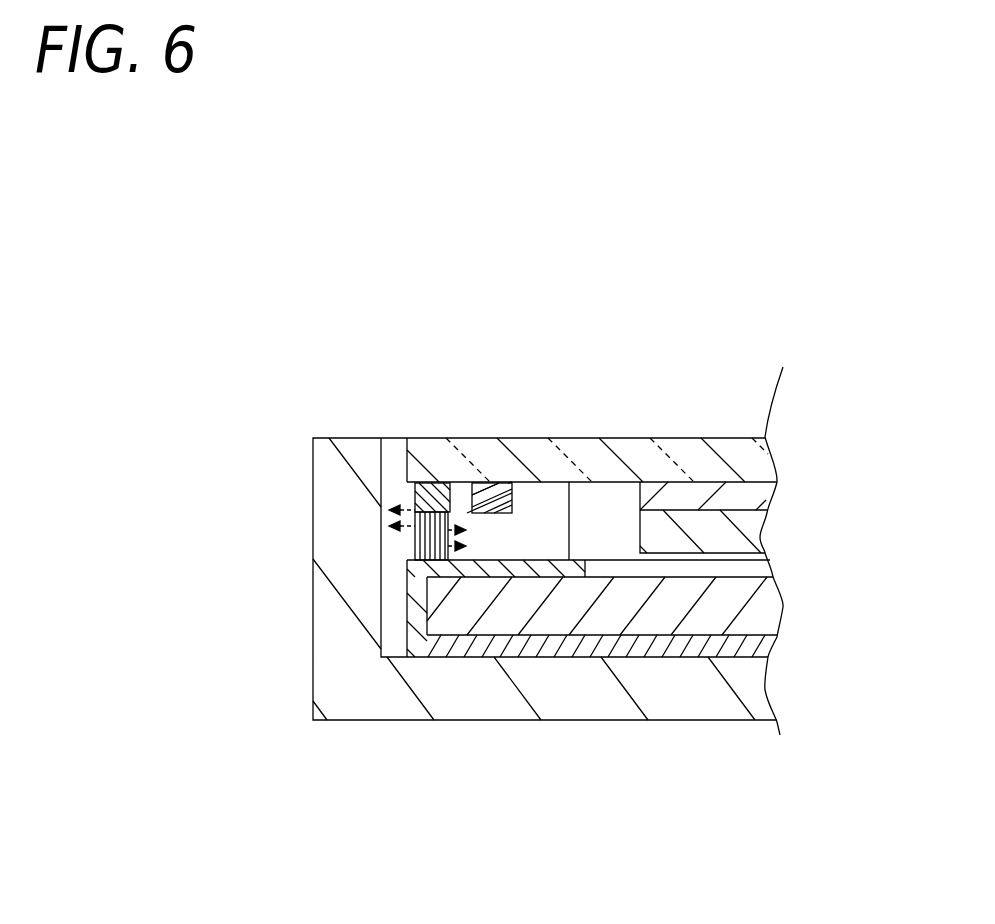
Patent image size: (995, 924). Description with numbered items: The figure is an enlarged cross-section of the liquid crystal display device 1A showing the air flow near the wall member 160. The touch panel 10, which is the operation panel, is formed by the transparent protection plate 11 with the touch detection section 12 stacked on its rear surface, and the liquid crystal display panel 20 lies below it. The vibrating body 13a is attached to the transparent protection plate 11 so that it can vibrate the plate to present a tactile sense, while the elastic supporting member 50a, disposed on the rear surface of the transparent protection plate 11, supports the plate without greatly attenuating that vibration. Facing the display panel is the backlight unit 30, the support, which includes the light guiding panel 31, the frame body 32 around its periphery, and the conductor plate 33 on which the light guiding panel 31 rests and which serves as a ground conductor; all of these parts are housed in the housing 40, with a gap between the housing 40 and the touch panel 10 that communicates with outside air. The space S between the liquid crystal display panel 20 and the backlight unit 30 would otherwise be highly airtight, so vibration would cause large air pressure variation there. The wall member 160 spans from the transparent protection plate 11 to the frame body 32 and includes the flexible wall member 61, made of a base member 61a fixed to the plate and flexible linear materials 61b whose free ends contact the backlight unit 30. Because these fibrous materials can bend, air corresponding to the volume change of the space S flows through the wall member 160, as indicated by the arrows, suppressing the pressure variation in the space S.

The liquid crystal display device 1A is at (680, 218).
The touch panel 10 is at (702, 342).
The transparent protection plate 11 is at (655, 445).
The touch detection section 12 is at (700, 483).
The vibrating body 13a is at (480, 482).
The liquid crystal display panel 20 is at (755, 512).
The backlight unit 30 is at (542, 785).
The light guiding panel 31 is at (528, 625).
The frame body 32 is at (507, 577).
The conductor plate 33 is at (442, 645).
The housing 40 is at (590, 700).
The elastic supporting member 50a is at (543, 495).
The space S is at (605, 508).
The flexible wall member 61 is at (225, 497).
The base member 61a is at (415, 495).
The flexible linear materials 61b is at (415, 535).
The wall member 160 is at (437, 484).